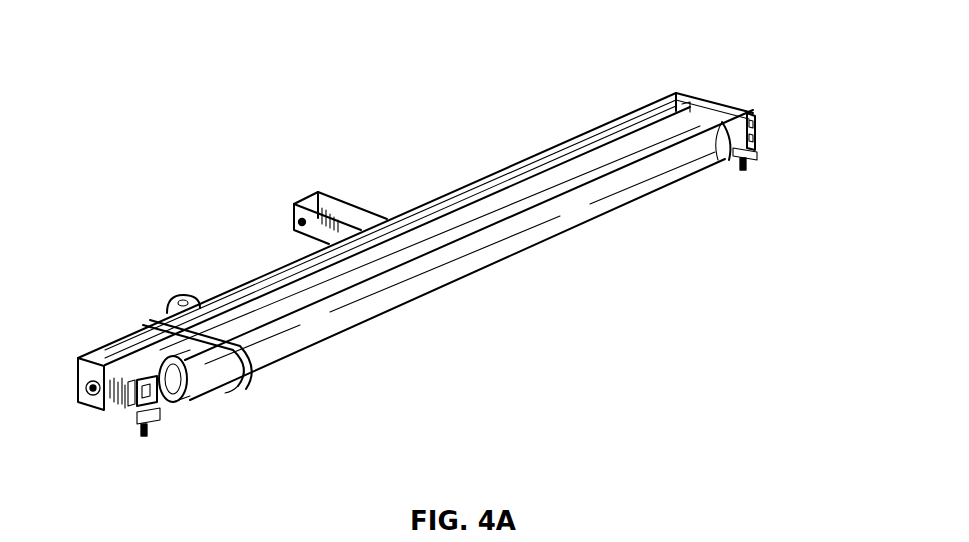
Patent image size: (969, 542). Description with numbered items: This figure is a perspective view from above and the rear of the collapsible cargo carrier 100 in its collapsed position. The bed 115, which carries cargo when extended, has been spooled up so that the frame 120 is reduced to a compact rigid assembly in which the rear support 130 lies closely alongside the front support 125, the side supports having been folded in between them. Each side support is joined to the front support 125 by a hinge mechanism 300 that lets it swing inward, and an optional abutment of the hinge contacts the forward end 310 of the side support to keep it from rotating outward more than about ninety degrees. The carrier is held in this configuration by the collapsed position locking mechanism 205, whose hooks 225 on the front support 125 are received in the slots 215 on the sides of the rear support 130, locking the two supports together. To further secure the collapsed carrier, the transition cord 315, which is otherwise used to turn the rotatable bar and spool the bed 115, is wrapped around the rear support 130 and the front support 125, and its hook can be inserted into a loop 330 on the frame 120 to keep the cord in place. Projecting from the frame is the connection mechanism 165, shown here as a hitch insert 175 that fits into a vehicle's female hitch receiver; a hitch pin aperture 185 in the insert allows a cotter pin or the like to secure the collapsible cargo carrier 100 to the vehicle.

The collapsible cargo carrier 100 is at (682, 25).
The bed 115 is at (650, 137).
The frame 120 is at (99, 340).
The front support 125 is at (500, 168).
The rear support 130 is at (735, 145).
The connection mechanism 165 is at (315, 167).
The hitch insert 175 is at (345, 196).
The hitch pin aperture 185 is at (298, 220).
The collapsed position locking mechanism 205 is at (789, 84).
The slots 215 is at (140, 398).
The hooks 225 is at (183, 400).
The hinge mechanism 300 is at (152, 464).
The forward end 310 is at (130, 392).
The transition cord 315 is at (240, 372).
The loop 330 is at (177, 297).